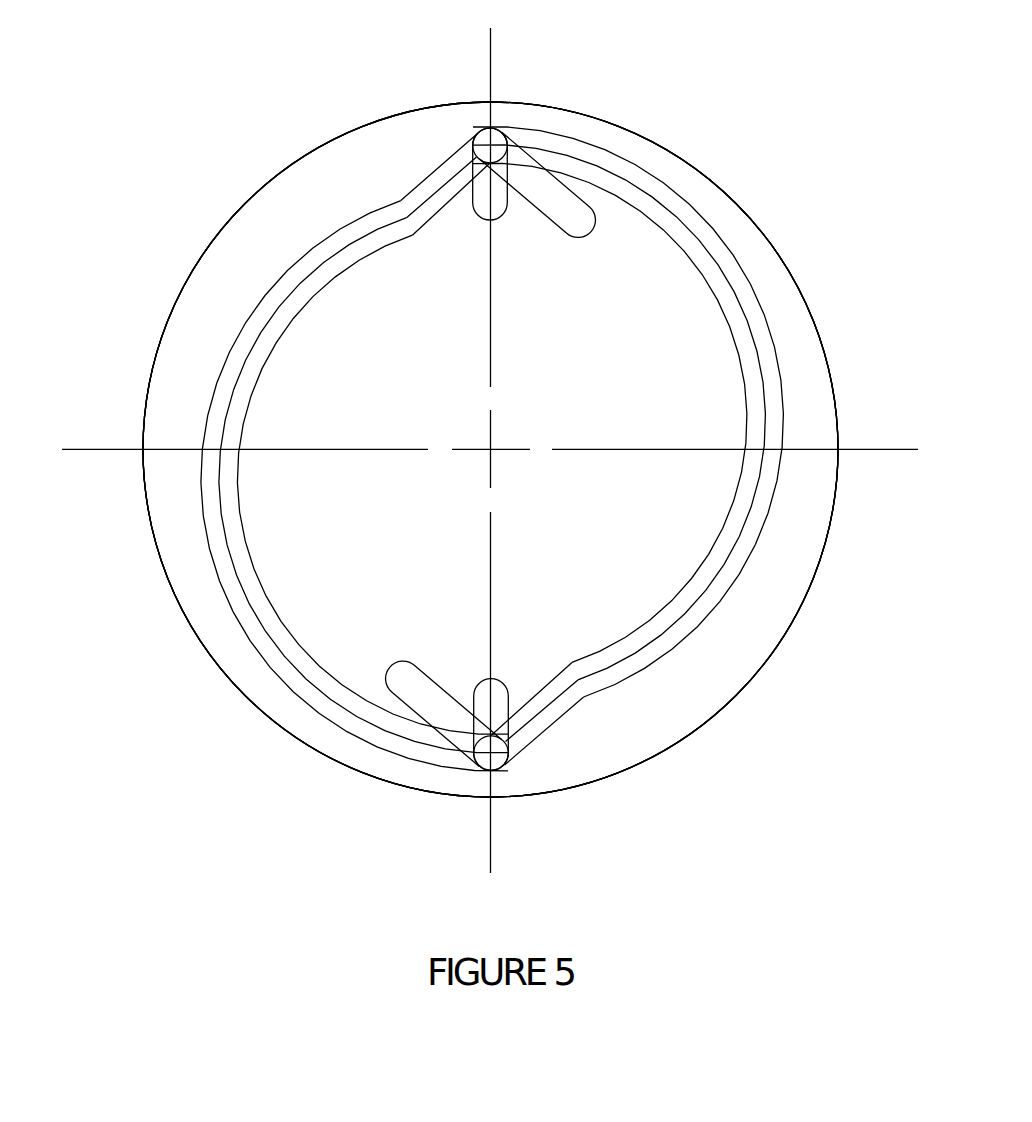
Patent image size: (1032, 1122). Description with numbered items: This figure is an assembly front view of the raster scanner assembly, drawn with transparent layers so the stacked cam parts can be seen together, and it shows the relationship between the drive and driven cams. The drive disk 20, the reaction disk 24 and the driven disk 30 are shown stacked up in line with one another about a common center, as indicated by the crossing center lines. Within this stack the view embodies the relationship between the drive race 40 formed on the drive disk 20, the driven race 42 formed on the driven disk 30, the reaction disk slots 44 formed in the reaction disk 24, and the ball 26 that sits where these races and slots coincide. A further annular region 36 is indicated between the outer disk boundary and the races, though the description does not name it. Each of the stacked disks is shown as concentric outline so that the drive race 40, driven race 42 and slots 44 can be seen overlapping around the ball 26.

The drive disk 20 is at (705, 174).
The reaction disk 24 is at (490, 449).
The driven disk 30 is at (490, 449).
The ball 26 is at (470, 131).
The annular space 36 is at (806, 367).
The drive race 40 is at (731, 291).
The driven race 42 is at (566, 183).
The reaction disk slots 44 is at (470, 202).